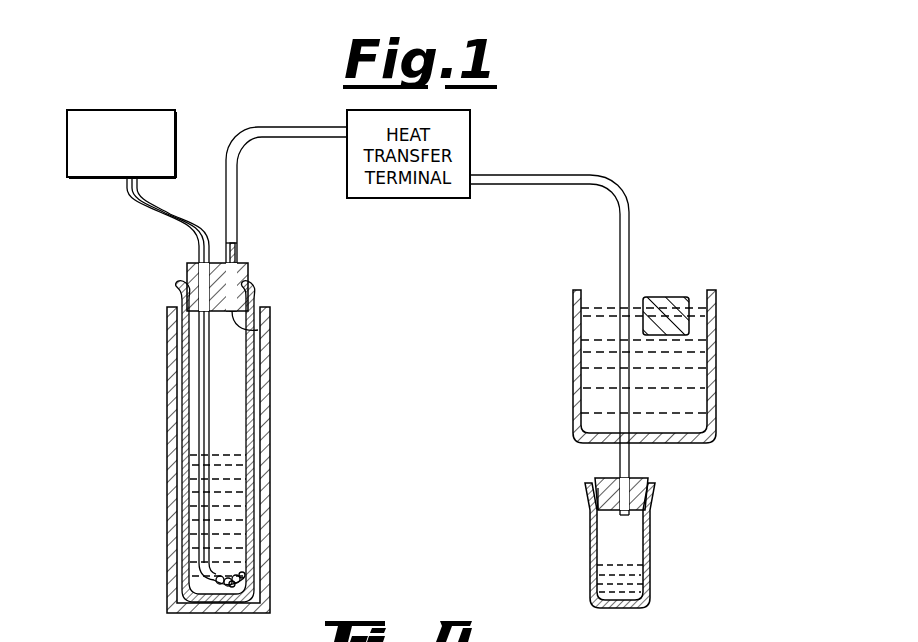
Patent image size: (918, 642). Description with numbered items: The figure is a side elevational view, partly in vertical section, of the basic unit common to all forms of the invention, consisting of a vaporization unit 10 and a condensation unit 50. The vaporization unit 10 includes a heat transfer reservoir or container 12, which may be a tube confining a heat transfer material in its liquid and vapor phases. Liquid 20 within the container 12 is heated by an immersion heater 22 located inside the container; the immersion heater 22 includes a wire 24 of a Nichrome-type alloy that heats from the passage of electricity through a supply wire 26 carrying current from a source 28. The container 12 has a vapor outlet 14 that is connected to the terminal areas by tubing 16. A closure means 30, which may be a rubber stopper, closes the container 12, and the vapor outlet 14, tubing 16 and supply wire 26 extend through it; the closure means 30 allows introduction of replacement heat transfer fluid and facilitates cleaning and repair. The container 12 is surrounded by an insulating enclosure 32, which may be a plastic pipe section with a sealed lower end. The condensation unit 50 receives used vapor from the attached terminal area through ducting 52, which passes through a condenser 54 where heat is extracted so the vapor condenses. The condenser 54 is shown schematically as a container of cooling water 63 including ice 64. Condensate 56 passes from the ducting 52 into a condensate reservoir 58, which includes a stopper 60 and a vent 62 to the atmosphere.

The vaporization unit 10 is at (128, 383).
The heat transfer reservoir or container 12 is at (182, 300).
The vapor outlet 14 is at (258, 330).
The tubing 16 is at (237, 190).
The liquid 20 is at (237, 506).
The immersion heater 22 is at (235, 574).
The wire 24 is at (233, 586).
The supply wire 26 is at (160, 215).
The source 28 is at (97, 110).
The closure means 30 is at (187, 268).
The insulating enclosure 32 is at (268, 385).
The condensation unit 50 is at (735, 312).
The ducting 52 is at (628, 210).
The condenser 54 is at (712, 373).
The condensate 56 is at (640, 583).
The condensate reservoir 58 is at (650, 541).
The stopper 60 is at (645, 481).
The vent 62 is at (600, 478).
The cooling water 63 is at (700, 413).
The ice 64 is at (665, 297).